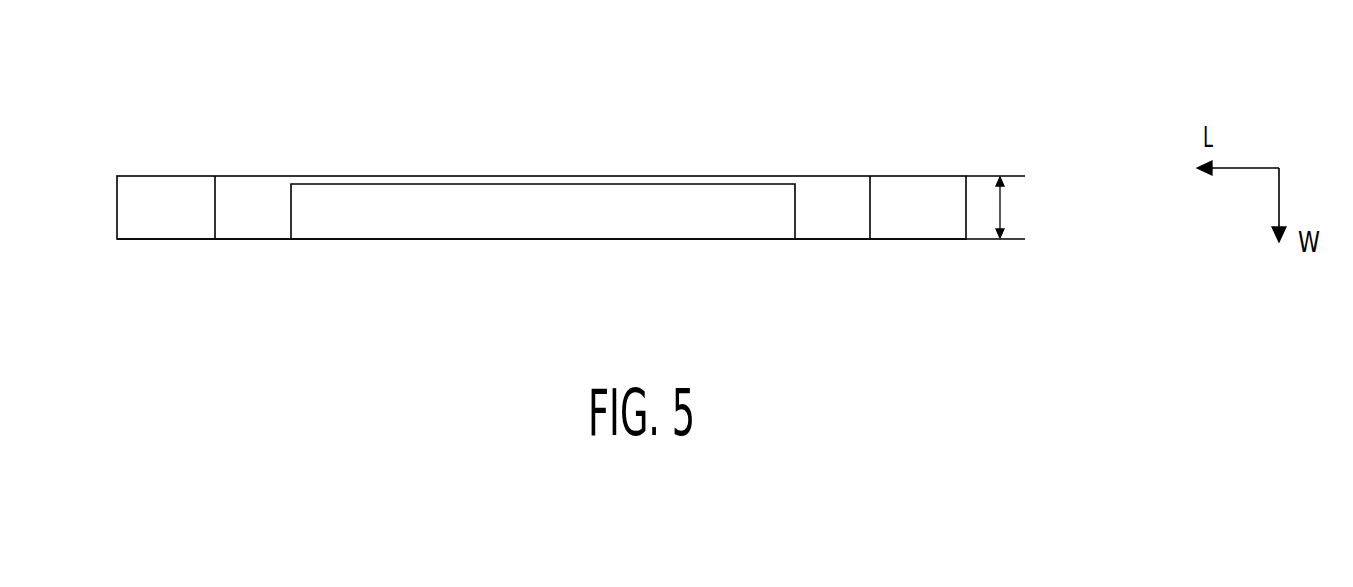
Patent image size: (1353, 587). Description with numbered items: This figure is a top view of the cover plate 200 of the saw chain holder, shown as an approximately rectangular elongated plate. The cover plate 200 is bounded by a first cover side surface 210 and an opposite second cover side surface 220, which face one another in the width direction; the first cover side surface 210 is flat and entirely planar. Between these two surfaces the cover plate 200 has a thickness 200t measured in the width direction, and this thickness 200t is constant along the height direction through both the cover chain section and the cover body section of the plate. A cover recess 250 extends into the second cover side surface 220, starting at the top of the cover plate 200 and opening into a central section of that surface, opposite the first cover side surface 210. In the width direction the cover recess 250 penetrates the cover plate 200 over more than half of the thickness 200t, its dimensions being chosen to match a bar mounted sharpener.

The cover plate 200 is at (240, 98).
The first cover side surface 210 is at (900, 176).
The second cover side surface 220 is at (900, 240).
The cover recess 250 is at (460, 218).
The thickness 200t is at (1000, 210).